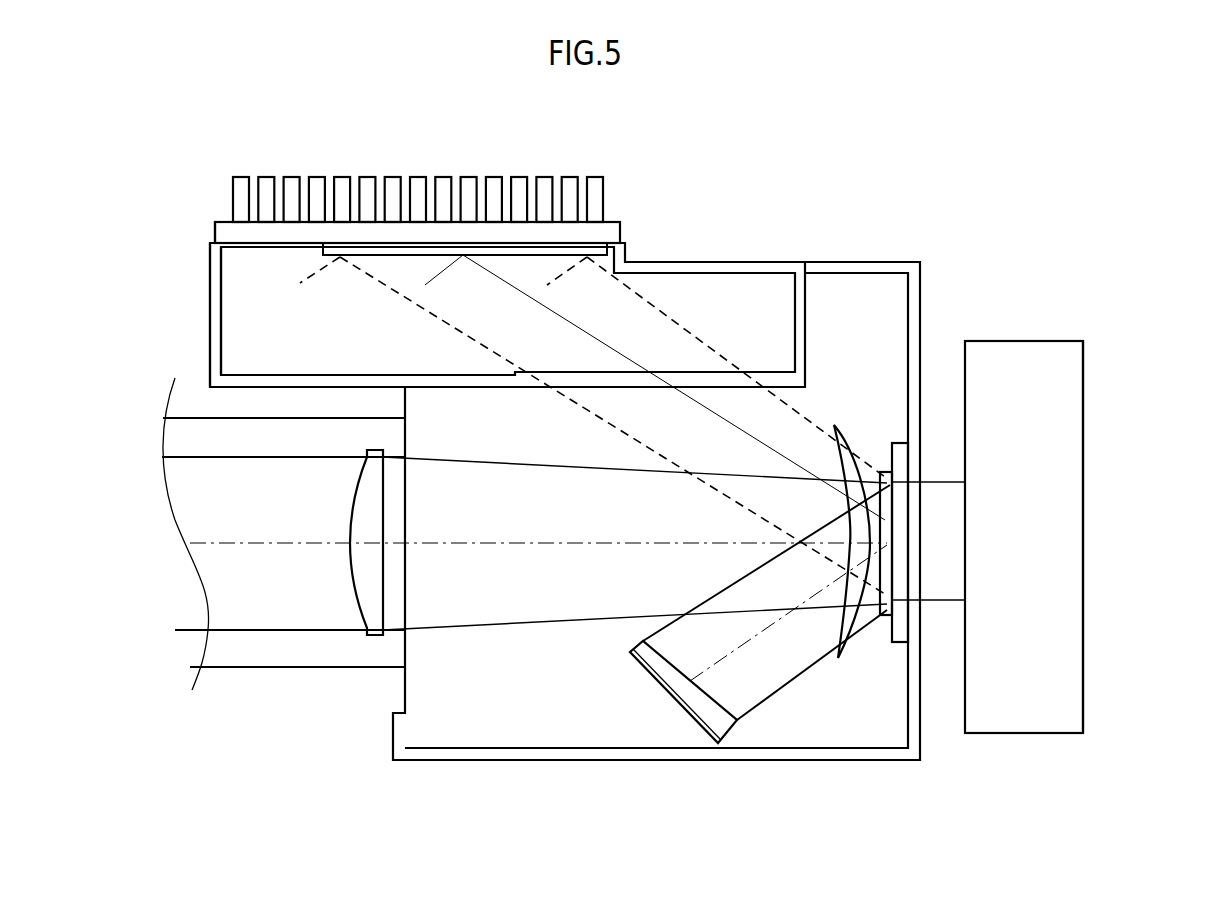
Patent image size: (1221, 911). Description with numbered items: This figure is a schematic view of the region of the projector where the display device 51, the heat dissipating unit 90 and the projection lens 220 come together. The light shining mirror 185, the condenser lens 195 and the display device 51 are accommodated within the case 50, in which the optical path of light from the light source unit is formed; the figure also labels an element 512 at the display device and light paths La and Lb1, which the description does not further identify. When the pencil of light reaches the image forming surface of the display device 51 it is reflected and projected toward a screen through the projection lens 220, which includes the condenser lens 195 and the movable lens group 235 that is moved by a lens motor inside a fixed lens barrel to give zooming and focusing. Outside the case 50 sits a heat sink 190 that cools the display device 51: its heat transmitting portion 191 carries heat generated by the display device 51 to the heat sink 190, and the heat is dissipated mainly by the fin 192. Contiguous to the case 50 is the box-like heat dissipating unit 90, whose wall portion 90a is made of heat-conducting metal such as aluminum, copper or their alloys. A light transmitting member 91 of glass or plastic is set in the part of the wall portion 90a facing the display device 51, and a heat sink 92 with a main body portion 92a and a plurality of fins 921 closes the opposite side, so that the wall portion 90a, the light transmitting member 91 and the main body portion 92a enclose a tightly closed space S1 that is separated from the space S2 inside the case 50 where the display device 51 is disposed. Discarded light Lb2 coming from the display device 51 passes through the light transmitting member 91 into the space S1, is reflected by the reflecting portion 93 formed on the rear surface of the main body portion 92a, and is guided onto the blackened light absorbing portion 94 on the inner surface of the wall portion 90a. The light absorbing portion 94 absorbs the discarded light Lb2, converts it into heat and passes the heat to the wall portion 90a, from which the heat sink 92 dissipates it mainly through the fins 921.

The case 50 is at (896, 253).
The display device 51 is at (897, 632).
The heat dissipating unit 90 is at (210, 269).
The wall portion 90a is at (210, 338).
The light transmitting member 91 is at (685, 372).
The heat sink 92 is at (622, 222).
The main body portion 92a is at (215, 240).
The fins 921 is at (603, 185).
The reflecting portion 93 is at (412, 250).
The light absorbing portion 94 is at (222, 323).
The space S1 is at (248, 293).
The space S2 is at (888, 307).
The light shining mirror 185 is at (676, 708).
The heat sink 190 is at (1038, 341).
The heat transmitting portion 191 is at (948, 568).
The fin 192 is at (1083, 382).
The condenser lens 195 is at (845, 660).
The projection lens 220 is at (257, 667).
The movable lens group 235 is at (352, 637).
The light modulation device 512 is at (897, 525).
The light beam from light source La is at (783, 687).
The image light Lb1 is at (525, 620).
The discarded light Lb2 is at (712, 348).